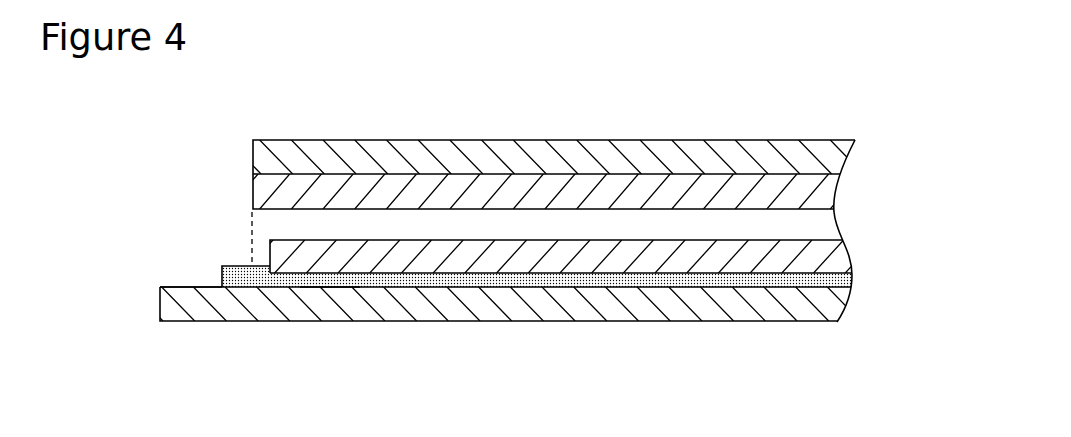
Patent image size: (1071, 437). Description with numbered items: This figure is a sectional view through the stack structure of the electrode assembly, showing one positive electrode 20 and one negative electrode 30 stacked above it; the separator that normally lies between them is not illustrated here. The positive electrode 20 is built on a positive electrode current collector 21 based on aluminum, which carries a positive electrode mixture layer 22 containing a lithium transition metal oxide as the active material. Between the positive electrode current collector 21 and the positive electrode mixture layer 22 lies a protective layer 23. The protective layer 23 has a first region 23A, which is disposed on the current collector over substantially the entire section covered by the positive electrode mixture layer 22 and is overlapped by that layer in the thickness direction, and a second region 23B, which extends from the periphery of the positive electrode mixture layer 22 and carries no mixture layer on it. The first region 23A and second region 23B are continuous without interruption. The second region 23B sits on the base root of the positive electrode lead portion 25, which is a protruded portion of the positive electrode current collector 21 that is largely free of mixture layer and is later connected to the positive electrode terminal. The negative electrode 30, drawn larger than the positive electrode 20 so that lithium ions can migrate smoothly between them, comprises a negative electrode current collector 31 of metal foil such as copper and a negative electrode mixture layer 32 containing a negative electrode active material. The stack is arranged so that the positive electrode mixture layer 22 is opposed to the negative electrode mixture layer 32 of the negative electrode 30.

The positive electrode 20 is at (482, 288).
The positive electrode current collector 21 is at (473, 308).
The positive electrode mixture layer 22 is at (522, 260).
The protective layer 23 is at (521, 288).
The first region 23A is at (335, 287).
The second region 23B is at (244, 263).
The positive electrode lead portion 25 is at (188, 298).
The negative electrode 30 is at (525, 195).
The negative electrode current collector 31 is at (447, 158).
The negative electrode mixture layer 32 is at (507, 177).